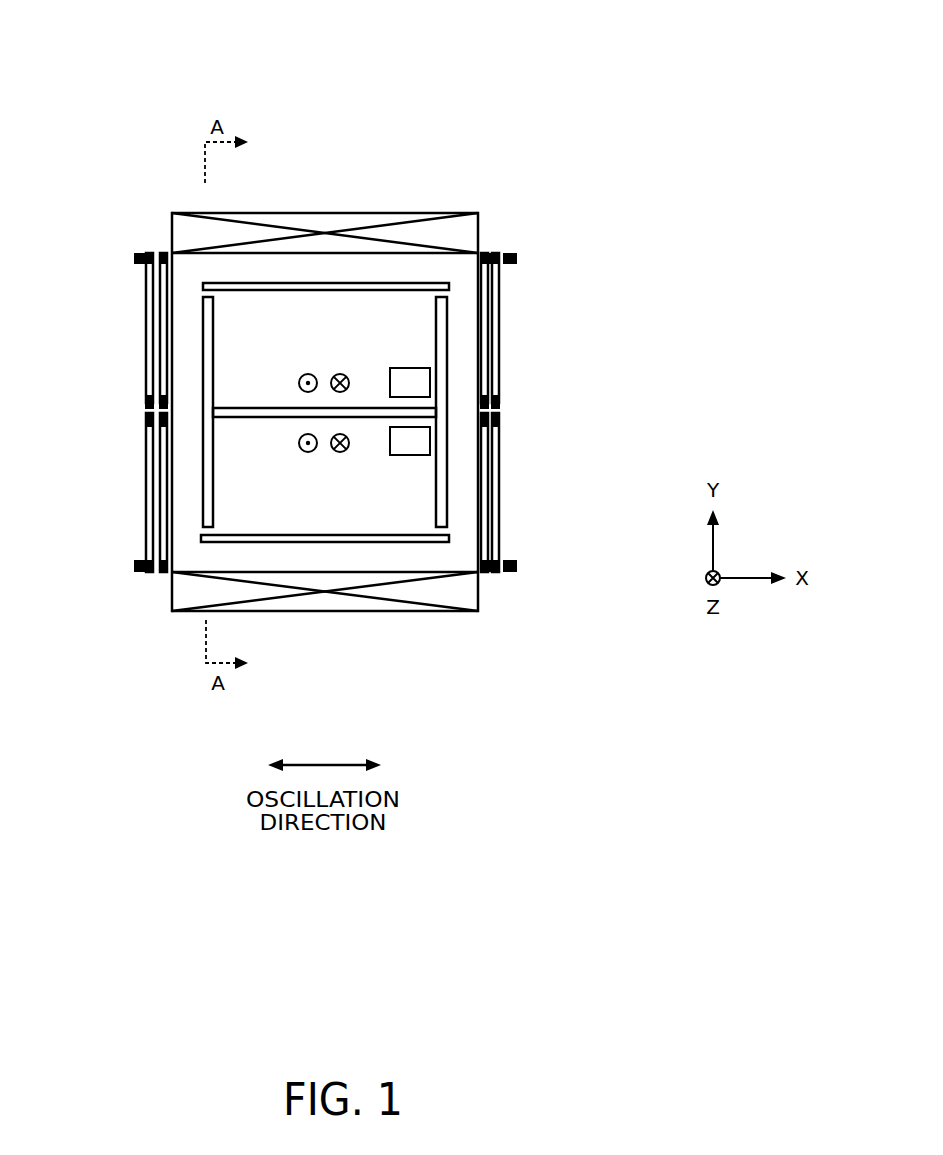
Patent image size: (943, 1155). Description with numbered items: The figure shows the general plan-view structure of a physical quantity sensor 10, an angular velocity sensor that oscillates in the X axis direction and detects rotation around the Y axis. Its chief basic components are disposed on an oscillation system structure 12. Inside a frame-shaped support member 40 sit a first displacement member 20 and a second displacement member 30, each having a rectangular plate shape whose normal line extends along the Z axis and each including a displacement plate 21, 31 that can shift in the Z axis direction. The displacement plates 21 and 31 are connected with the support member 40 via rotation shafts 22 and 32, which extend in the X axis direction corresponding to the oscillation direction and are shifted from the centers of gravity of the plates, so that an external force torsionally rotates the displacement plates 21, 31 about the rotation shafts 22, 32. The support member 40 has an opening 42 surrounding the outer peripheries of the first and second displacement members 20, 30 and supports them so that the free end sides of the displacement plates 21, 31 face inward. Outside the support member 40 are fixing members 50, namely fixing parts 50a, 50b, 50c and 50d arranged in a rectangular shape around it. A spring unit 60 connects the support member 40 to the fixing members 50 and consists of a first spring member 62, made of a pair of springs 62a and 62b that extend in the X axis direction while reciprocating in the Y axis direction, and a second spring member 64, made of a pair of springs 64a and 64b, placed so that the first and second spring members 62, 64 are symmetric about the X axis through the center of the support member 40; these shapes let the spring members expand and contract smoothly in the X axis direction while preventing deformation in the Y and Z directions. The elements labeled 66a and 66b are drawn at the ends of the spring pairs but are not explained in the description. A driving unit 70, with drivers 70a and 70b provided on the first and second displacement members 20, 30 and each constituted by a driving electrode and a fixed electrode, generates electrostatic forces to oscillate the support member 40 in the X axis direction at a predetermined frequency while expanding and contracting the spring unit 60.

The physical quantity sensor 10 is at (324, 92).
The oscillation system structure 12 is at (195, 232).
The first displacement member 20 is at (283, 283).
The displacement plate 21 is at (370, 317).
The rotation shaft 22 is at (208, 292).
The second displacement member 30 is at (369, 518).
The displacement plate 31 is at (327, 497).
The rotation shaft 32 is at (209, 548).
The support member 40 is at (260, 560).
The opening 42 is at (207, 332).
The fixing members 50 is at (345, 408).
The fixing part 50a is at (138, 252).
The fixing part 50b is at (138, 572).
The fixing part 50c is at (512, 252).
The fixing part 50d is at (517, 573).
The spring unit 60 is at (611, 392).
The first spring member 62 is at (522, 385).
The spring 62a is at (505, 333).
The spring 62b is at (150, 360).
The second spring member 64 is at (522, 447).
The spring 64a is at (505, 497).
The spring 64b is at (150, 493).
The connection portion 66a is at (494, 252).
The connection portion 66b is at (497, 573).
The driving unit 70 is at (412, 233).
The driver 70a is at (325, 233).
The driver 70b is at (287, 592).